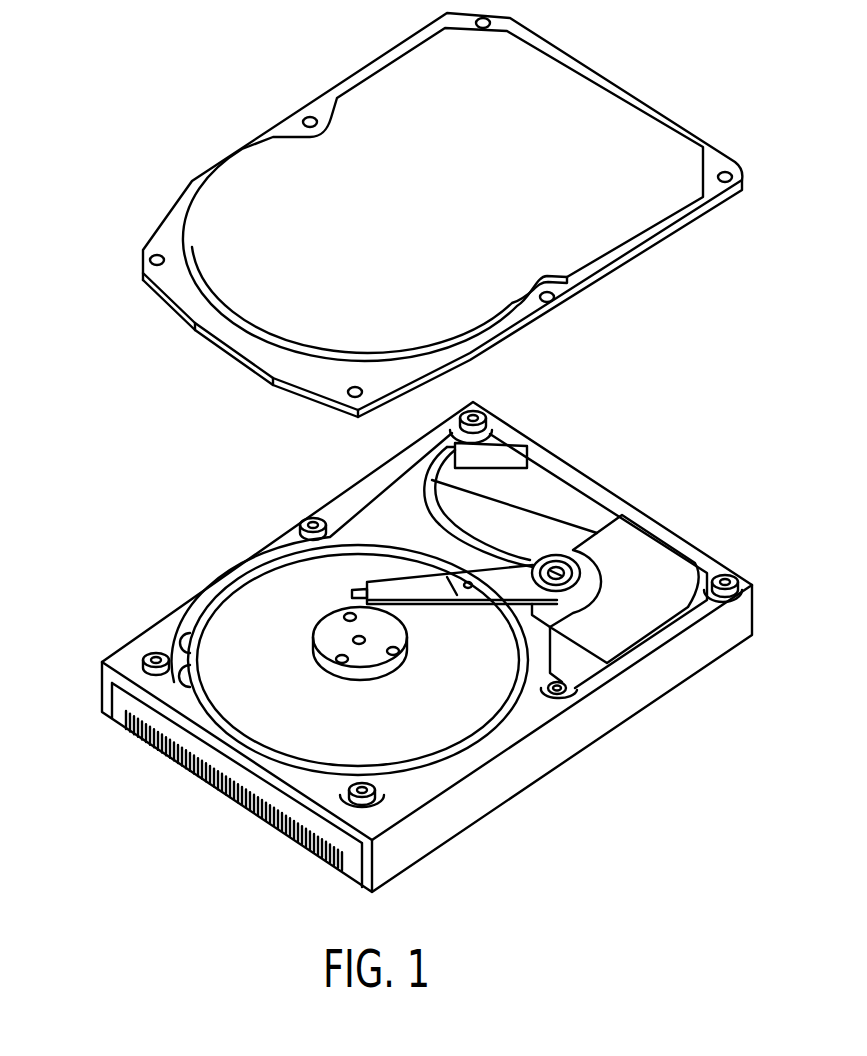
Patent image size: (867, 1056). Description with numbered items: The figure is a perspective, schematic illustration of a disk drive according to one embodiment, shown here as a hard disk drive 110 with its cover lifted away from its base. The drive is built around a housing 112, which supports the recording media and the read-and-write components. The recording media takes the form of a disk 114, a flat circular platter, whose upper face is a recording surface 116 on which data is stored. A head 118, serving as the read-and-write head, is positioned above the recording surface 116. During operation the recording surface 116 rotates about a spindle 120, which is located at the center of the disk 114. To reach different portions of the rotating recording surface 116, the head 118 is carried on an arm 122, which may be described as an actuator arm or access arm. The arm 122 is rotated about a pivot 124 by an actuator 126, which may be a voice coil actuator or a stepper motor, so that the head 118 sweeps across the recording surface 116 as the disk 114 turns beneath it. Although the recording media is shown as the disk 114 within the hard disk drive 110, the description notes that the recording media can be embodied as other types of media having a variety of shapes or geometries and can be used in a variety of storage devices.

The hard disk drive 110 is at (102, 915).
The housing 112 is at (587, 238).
The disk 114 is at (377, 719).
The recording surface 116 is at (328, 718).
The head 118 is at (372, 590).
The spindle 120 is at (480, 727).
The arm 122 is at (478, 613).
The pivot 124 is at (573, 551).
The actuator 126 is at (650, 557).